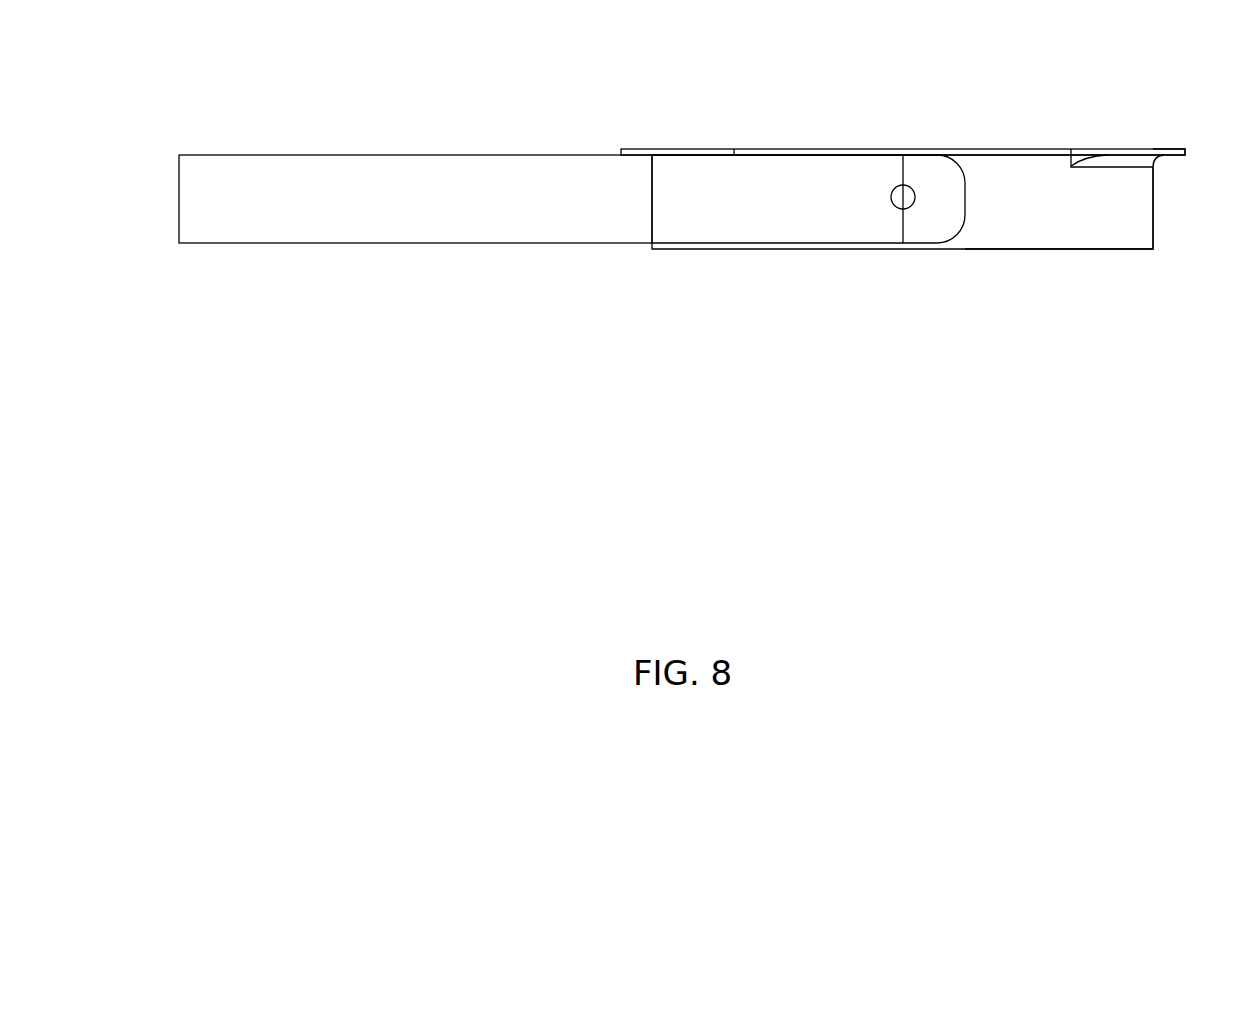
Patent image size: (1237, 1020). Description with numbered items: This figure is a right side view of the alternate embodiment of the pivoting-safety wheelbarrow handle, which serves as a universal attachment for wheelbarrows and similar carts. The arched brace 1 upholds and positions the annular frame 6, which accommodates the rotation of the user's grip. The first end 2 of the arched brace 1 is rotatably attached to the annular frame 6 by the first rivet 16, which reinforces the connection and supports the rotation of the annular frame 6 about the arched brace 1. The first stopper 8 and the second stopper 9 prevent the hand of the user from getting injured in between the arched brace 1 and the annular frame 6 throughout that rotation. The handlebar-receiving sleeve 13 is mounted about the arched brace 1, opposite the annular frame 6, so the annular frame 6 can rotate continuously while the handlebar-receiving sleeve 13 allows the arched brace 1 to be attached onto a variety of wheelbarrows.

The arched brace 1 is at (747, 262).
The first end 2 is at (955, 218).
The annular frame 6 is at (1140, 202).
The first stopper 8 is at (656, 152).
The second stopper 9 is at (1156, 150).
The handlebar-receiving sleeve 13 is at (405, 148).
The first rivet 16 is at (897, 200).